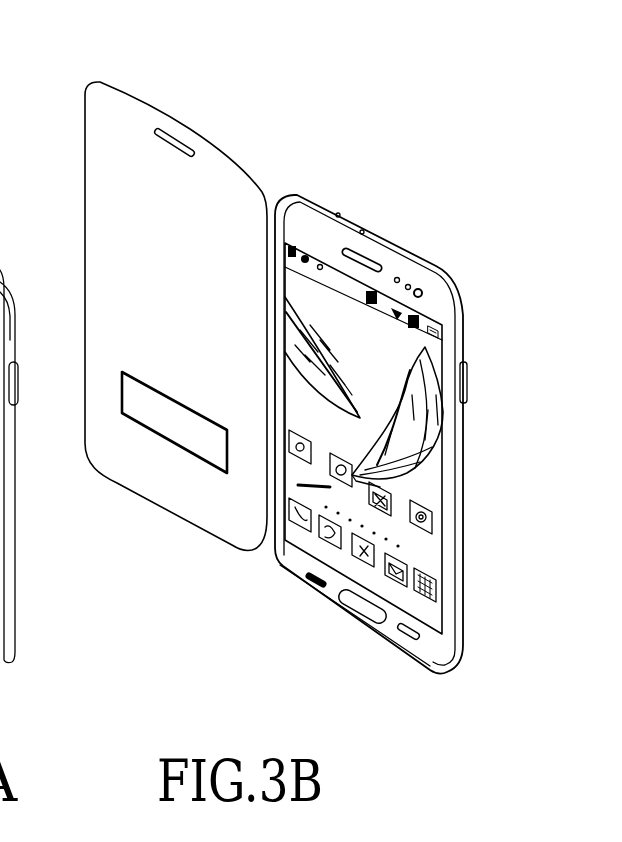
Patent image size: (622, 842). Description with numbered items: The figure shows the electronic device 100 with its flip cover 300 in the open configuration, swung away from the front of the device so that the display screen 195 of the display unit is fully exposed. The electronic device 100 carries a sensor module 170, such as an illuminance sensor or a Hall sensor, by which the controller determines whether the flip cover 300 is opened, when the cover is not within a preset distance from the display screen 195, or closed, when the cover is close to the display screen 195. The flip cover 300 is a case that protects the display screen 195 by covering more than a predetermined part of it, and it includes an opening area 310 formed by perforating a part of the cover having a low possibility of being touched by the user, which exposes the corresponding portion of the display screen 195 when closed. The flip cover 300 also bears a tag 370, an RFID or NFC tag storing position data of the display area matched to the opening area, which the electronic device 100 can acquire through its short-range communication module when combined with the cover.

The electronic device 100 is at (378, 242).
The sensor module 170 is at (416, 290).
The display screen 195 is at (433, 555).
The flip cover 300 is at (185, 125).
The opening area 310 is at (193, 440).
The tag 370 is at (108, 195).